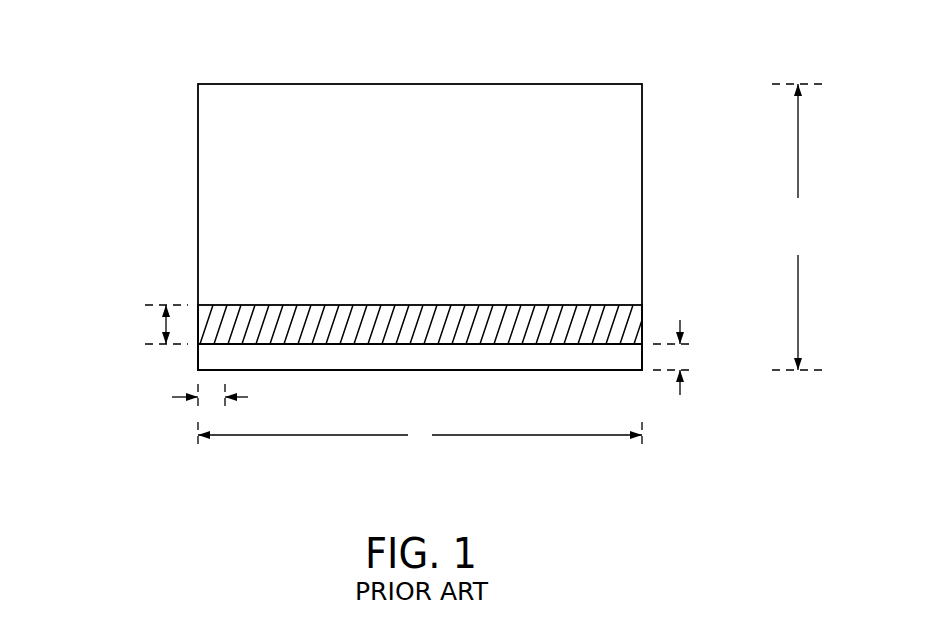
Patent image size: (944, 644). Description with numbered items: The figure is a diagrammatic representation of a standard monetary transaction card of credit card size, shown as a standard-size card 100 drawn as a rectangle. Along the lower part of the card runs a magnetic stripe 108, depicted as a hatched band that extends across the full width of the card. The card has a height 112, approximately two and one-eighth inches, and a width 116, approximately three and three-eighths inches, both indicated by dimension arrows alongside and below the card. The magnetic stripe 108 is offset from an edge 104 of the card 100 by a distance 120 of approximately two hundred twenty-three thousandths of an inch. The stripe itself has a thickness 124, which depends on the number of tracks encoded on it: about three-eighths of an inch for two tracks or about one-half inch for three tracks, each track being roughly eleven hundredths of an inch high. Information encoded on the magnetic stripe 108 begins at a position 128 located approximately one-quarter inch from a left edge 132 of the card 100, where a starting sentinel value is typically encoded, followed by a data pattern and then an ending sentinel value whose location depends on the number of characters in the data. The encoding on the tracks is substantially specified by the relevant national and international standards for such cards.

The CR-80 card 100 is at (108, 44).
The edge 104 is at (576, 374).
The magnetic stripe 108 is at (620, 306).
The height H 112 is at (811, 225).
The width W 116 is at (420, 424).
The distance D1 120 is at (705, 350).
The thickness D2 124 is at (133, 313).
The position P 128 is at (158, 385).
The left edge 132 is at (196, 171).